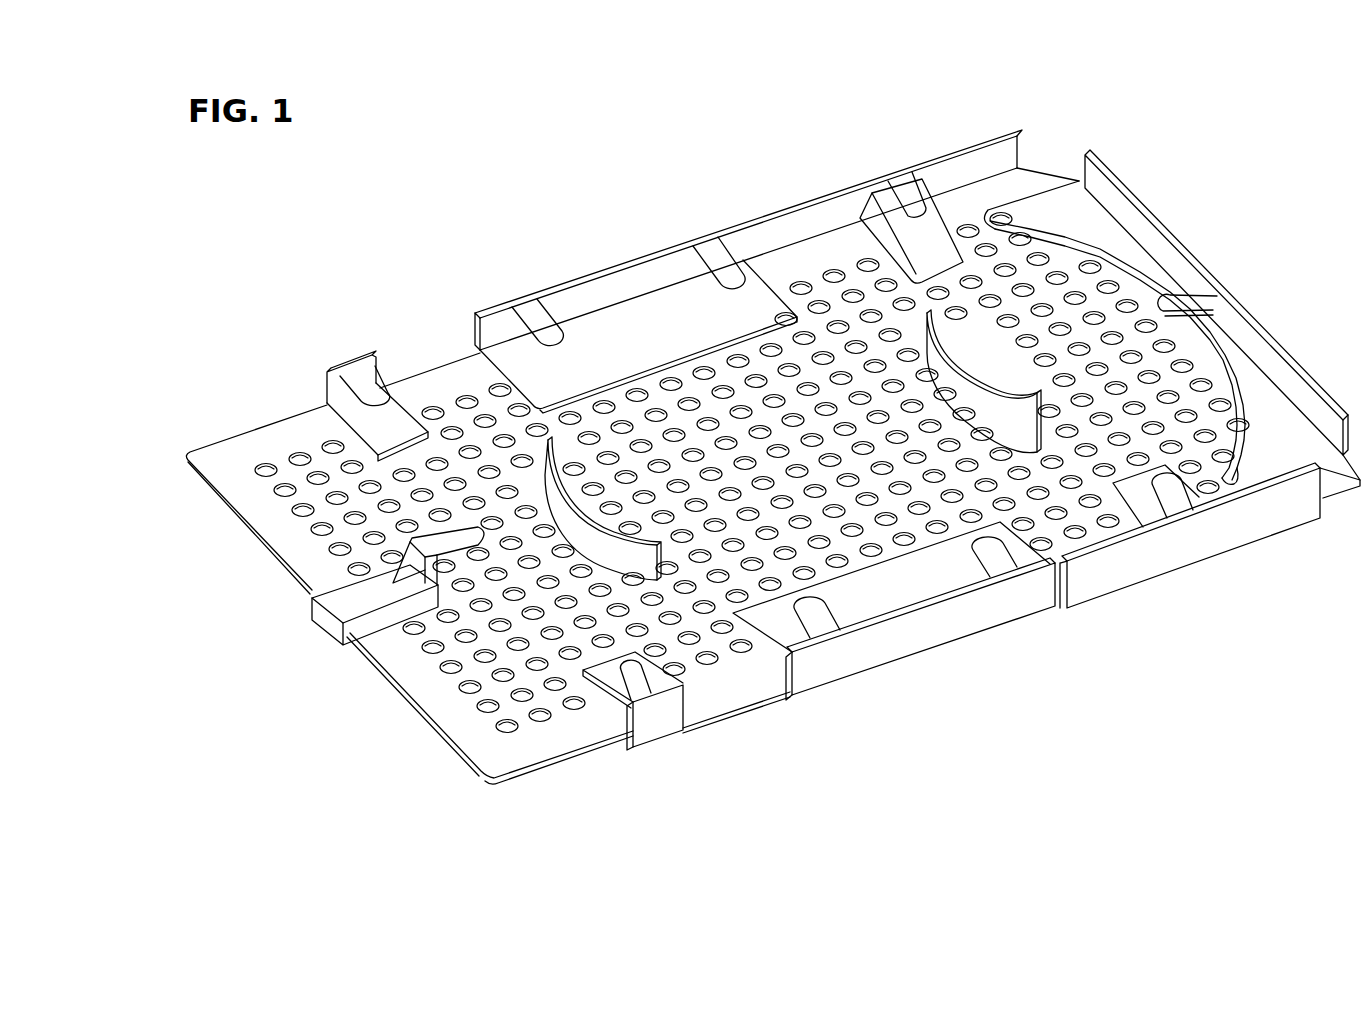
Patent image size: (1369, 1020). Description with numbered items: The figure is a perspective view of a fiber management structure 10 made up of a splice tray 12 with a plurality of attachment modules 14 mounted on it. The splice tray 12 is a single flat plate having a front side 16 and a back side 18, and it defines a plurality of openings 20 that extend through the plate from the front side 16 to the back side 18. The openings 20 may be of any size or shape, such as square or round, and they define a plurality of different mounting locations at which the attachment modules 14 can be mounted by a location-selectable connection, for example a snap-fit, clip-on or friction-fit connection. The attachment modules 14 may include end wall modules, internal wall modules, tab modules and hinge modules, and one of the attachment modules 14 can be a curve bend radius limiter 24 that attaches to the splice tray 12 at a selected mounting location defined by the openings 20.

The fiber management structure 10 is at (1191, 128).
The splice tray 12 is at (275, 426).
The attachment modules 14 is at (762, 206).
The front side 16 is at (493, 753).
The back side 18 is at (206, 502).
The openings 20 is at (871, 262).
The curve bend radius limiter 24 is at (968, 338).